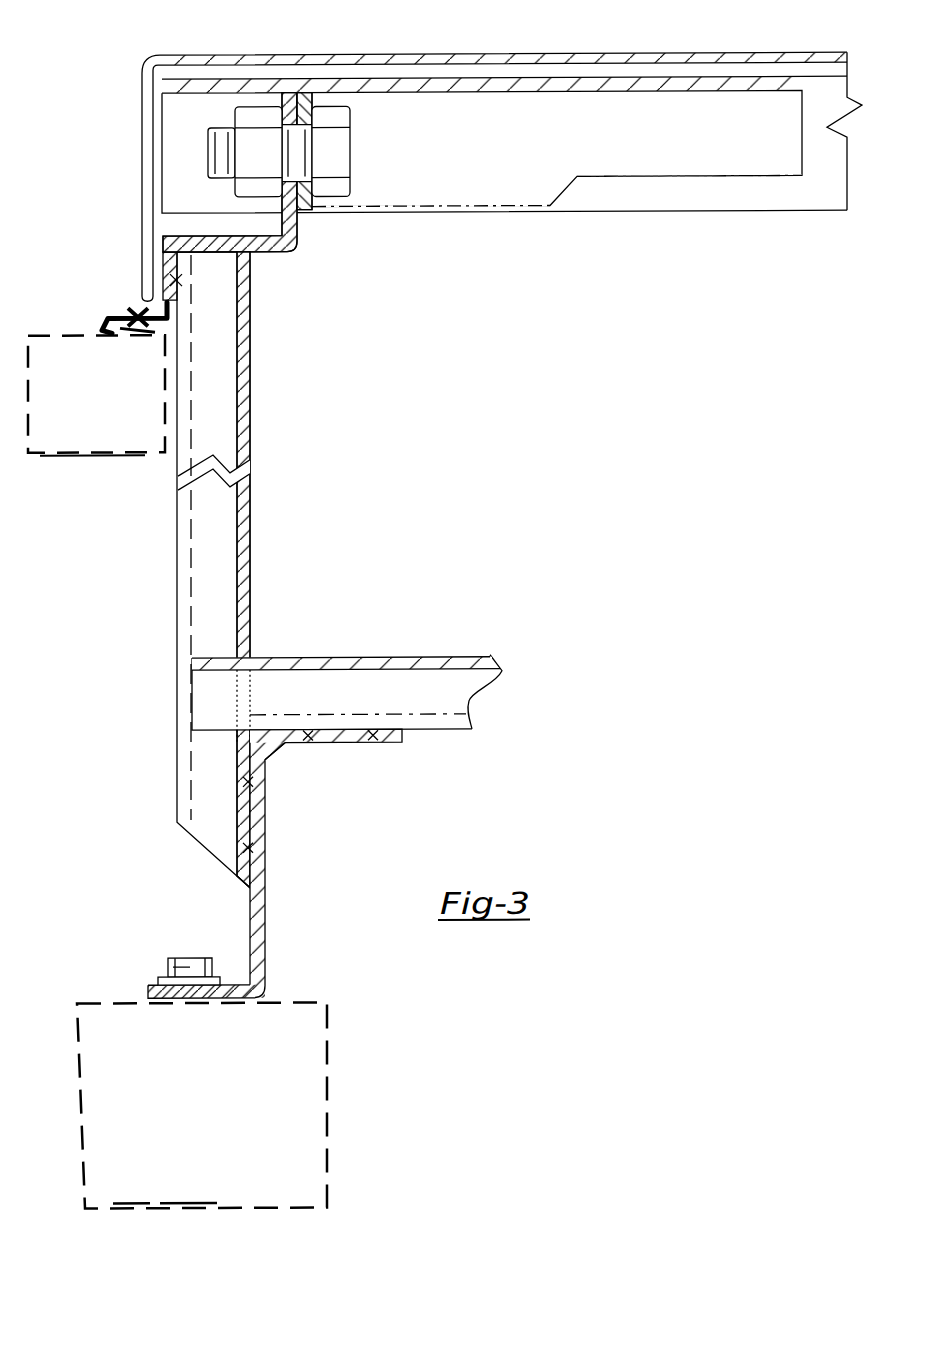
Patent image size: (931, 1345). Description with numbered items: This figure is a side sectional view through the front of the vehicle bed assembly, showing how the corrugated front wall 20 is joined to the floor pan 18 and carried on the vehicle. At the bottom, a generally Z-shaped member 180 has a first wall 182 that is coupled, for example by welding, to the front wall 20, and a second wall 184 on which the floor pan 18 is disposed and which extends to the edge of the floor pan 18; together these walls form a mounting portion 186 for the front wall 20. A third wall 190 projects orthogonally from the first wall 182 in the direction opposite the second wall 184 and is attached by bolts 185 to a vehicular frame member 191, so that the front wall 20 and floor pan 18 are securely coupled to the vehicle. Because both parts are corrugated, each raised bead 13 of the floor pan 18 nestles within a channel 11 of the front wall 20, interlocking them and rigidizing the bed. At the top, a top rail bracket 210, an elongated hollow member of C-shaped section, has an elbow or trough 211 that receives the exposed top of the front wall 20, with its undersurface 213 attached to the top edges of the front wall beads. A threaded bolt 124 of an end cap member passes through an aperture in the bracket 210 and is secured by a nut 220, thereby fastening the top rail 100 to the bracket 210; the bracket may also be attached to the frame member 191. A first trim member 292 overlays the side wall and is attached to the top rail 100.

The first trim member 292 is at (425, 52).
The top rail 100 is at (723, 200).
The top rail bracket 210 is at (285, 255).
The threaded bolt 124 is at (210, 147).
The nut 220 is at (247, 192).
The front wall 20 is at (258, 547).
The elbow or trough 211 is at (197, 280).
The undersurface 213 is at (220, 256).
The channel 11 is at (223, 640).
The raised bead 13 is at (313, 657).
The floor pan 18 is at (407, 652).
The Z shaped member 180 is at (260, 883).
The second wall 184 is at (367, 745).
The mounting portion 186 is at (301, 757).
The first wall 182 is at (250, 902).
The bolt 185 is at (190, 968).
The third wall 190 is at (203, 999).
The vehicular frame member 191 is at (327, 1203).